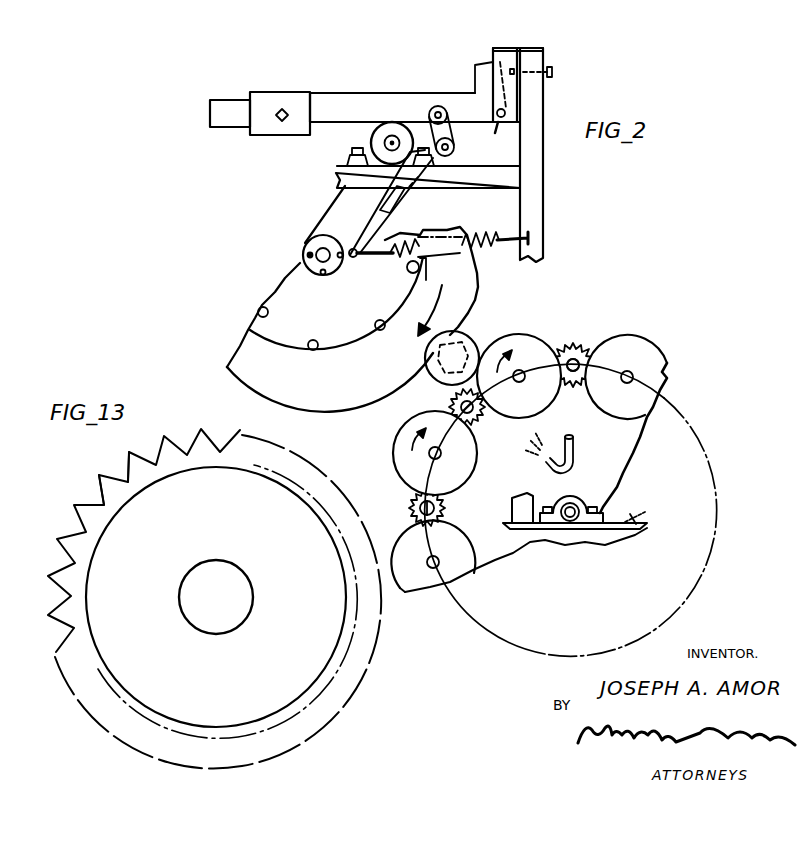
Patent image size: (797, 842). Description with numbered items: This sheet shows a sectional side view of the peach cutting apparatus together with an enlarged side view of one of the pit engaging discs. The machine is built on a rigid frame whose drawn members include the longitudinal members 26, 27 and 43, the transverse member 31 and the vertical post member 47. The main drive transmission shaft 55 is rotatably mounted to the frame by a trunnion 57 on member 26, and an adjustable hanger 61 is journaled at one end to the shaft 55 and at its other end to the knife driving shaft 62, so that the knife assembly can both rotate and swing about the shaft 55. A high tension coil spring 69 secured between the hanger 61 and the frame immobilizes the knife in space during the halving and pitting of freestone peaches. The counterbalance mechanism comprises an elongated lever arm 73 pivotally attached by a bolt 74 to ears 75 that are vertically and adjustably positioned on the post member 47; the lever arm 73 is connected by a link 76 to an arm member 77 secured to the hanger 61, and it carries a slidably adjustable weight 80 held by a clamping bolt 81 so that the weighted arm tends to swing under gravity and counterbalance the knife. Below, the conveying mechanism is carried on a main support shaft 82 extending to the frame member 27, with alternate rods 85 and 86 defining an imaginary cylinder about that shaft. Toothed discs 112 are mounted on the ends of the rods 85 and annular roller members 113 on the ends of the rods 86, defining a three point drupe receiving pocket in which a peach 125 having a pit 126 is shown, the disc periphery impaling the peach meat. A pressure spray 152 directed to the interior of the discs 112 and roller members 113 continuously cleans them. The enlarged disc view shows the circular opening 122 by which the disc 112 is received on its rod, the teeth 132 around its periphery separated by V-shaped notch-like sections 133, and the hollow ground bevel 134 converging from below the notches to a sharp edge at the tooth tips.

In FIG. 2, the longitudinal frame member 26 is at (478, 182).
In FIG. 2, the longitudinal frame member 27 is at (646, 515).
In FIG. 2, the transverse frame member 31 is at (535, 48).
In FIG. 2, the longitudinal frame member 43 is at (600, 538).
In FIG. 2, the vertical post member 47 is at (540, 115).
In FIG. 2, the main drive transmission shaft 55 is at (385, 141).
In FIG. 2, the trunnion 57 is at (352, 154).
In FIG. 2, the adjustable hanger 61 is at (340, 205).
In FIG. 2, the knife driving shaft 62 is at (312, 250).
In FIG. 2, the high tension coil spring 69 is at (398, 258).
In FIG. 2, the lever arm 73 is at (342, 100).
In FIG. 2, the bolt 74 is at (497, 110).
In FIG. 2, the ears 75 is at (508, 50).
In FIG. 2, the link 76 is at (455, 131).
In FIG. 2, the arm member 77 is at (436, 166).
In FIG. 2, the slidably adjustable weight 80 is at (262, 100).
In FIG. 2, the clamping bolt 81 is at (286, 108).
In FIG. 2, the main support shaft 82 is at (568, 530).
In FIG. 2, the rod 85 is at (571, 375).
In FIG. 2, the rod 86 is at (634, 383).
In FIG. 2, the disc 112 is at (571, 352).
In FIG. 13, the disc 112 is at (185, 427).
In FIG. 2, the annular roller member 113 is at (651, 341).
In FIG. 13, the circular opening 122 is at (248, 605).
In FIG. 2, the peach 125 is at (457, 333).
In FIG. 2, the pit 126 is at (478, 355).
In FIG. 13, the teeth 132 is at (100, 472).
In FIG. 13, the notch-like section 133 is at (125, 455).
In FIG. 13, the hollow ground bevel 134 is at (82, 583).
In FIG. 2, the pressure spray 152 is at (556, 462).